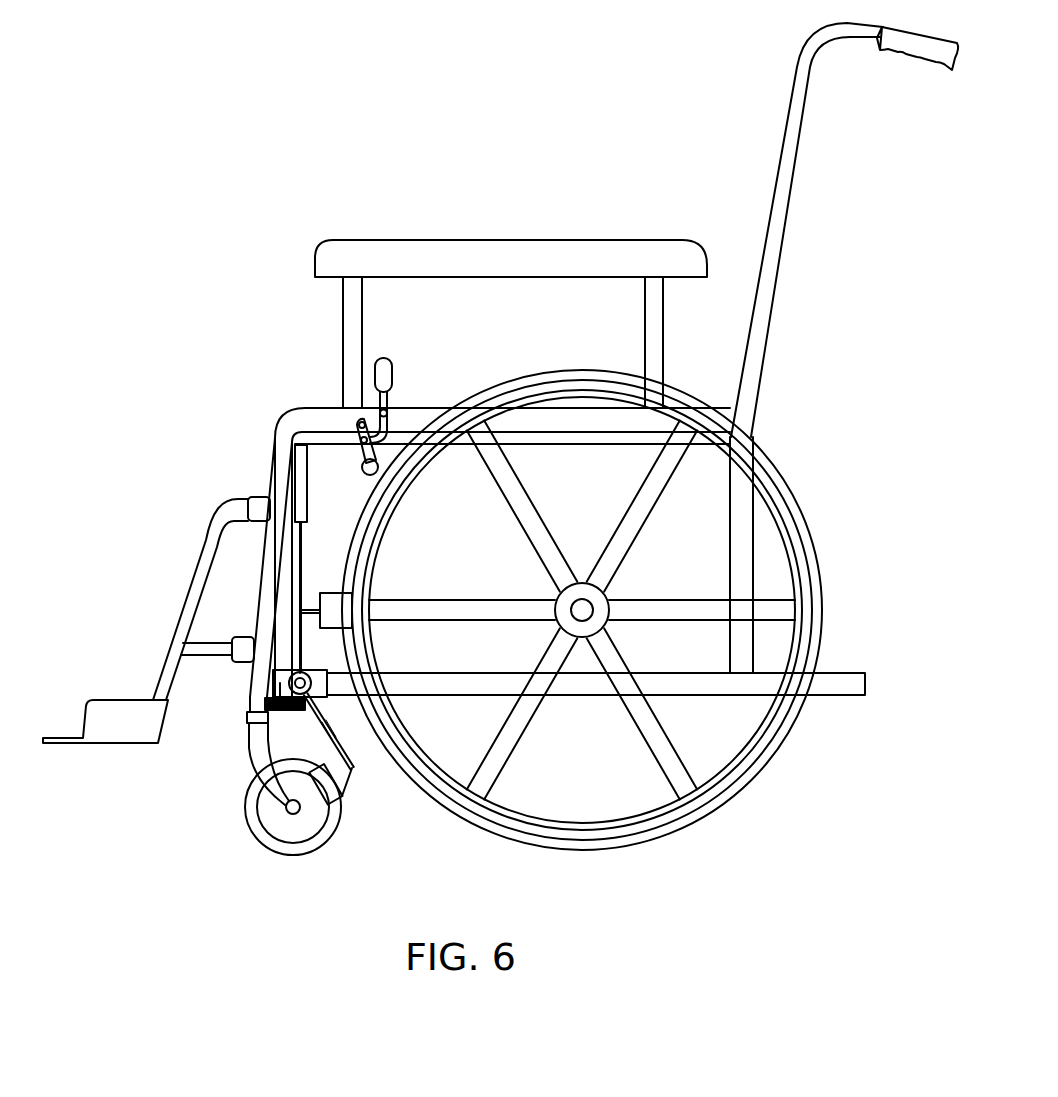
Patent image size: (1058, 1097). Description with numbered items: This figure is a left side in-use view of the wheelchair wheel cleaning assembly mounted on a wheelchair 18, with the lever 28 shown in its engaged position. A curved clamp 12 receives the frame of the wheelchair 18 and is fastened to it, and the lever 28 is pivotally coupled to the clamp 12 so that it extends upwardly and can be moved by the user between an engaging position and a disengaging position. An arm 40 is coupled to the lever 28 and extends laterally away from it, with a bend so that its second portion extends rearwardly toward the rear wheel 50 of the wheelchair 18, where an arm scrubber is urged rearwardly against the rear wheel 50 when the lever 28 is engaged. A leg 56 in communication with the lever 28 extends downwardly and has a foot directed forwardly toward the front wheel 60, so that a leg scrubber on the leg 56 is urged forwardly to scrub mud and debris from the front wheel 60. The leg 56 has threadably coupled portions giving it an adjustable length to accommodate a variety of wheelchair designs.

The wheelchair 18 is at (461, 172).
The rear wheel 50 is at (703, 819).
The arm 40 is at (320, 593).
The lever 28 is at (298, 580).
The leg 56 is at (352, 768).
The clamp 12 is at (267, 747).
The front wheel 60 is at (290, 853).